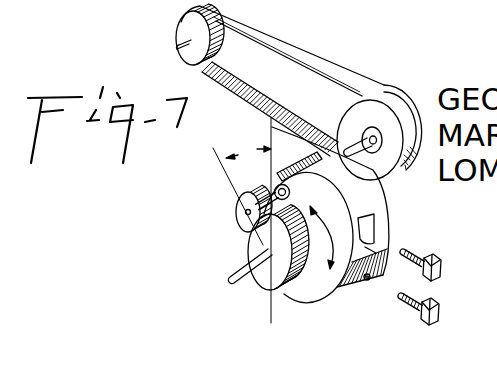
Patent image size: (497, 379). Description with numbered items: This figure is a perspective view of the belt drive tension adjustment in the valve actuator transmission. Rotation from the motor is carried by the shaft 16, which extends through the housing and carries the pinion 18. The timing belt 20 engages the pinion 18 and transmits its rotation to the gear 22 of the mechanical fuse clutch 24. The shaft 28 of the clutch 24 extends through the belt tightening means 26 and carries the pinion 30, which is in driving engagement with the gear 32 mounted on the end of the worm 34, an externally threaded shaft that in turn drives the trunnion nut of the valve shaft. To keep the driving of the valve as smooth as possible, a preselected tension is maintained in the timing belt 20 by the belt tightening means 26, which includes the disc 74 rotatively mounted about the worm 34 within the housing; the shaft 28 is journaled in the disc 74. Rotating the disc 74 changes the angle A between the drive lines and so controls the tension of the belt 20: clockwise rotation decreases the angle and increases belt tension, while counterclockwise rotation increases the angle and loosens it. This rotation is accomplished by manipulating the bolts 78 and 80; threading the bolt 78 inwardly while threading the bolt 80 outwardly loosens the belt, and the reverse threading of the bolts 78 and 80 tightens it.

The shaft 16 is at (183, 43).
The pinion 18 is at (178, 26).
The timing belt 20 is at (292, 47).
The gear 22 is at (342, 117).
The mechanical fuse clutch 24 is at (336, 107).
The belt tightening means 26 is at (410, 236).
The shaft 28 is at (271, 126).
The pinion 30 is at (235, 210).
The gear 32 is at (248, 250).
The worm 34 is at (232, 276).
The disc 74 is at (332, 300).
The bolt 78 is at (441, 272).
The bolt 80 is at (403, 307).